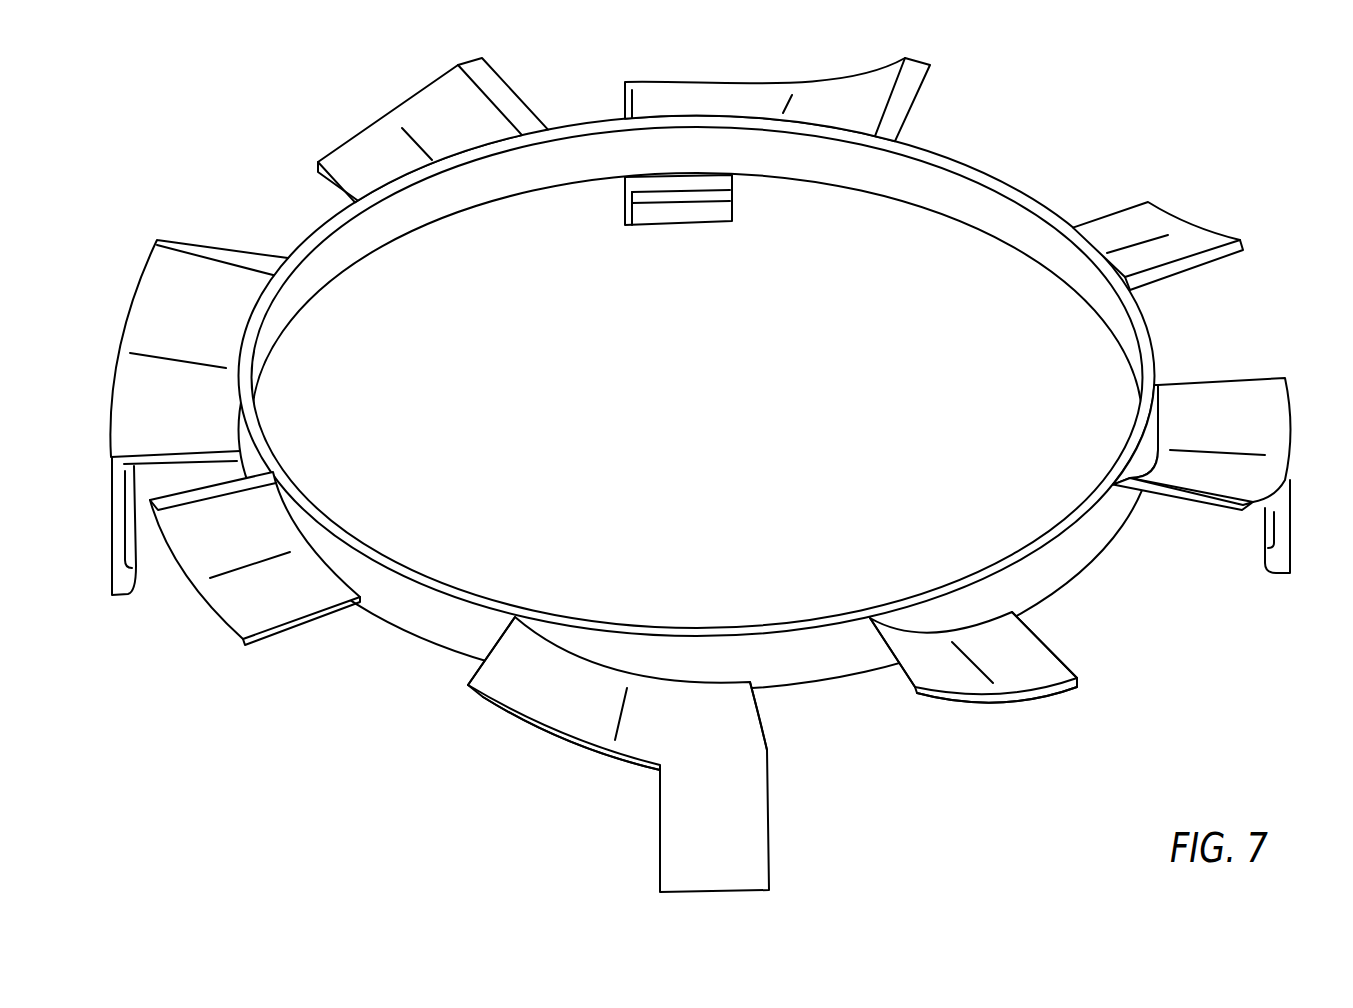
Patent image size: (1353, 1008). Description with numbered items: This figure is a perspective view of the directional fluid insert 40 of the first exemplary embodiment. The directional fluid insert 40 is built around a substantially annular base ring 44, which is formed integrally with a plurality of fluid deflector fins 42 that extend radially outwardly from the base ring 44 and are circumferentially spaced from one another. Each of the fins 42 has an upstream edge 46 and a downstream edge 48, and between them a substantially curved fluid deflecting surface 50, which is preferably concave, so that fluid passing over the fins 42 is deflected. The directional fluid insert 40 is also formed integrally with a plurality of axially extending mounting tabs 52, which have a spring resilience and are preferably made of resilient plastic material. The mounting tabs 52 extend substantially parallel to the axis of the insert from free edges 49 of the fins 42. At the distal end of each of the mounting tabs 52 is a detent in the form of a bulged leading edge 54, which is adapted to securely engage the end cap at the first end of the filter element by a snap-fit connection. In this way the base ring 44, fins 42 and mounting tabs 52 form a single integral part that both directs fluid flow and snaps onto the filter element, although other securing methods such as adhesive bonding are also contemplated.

The directional fluid insert 40 is at (1012, 180).
The fluid deflector fins 42 is at (380, 115).
The annular base ring 44 is at (817, 668).
The upstream edge 46 is at (465, 670).
The downstream edge 48 is at (766, 724).
The free edges 49 is at (542, 742).
The curved fluid deflecting surface 50 is at (228, 606).
The mounting tabs 52 is at (733, 206).
The bulged leading edge 54 is at (641, 214).